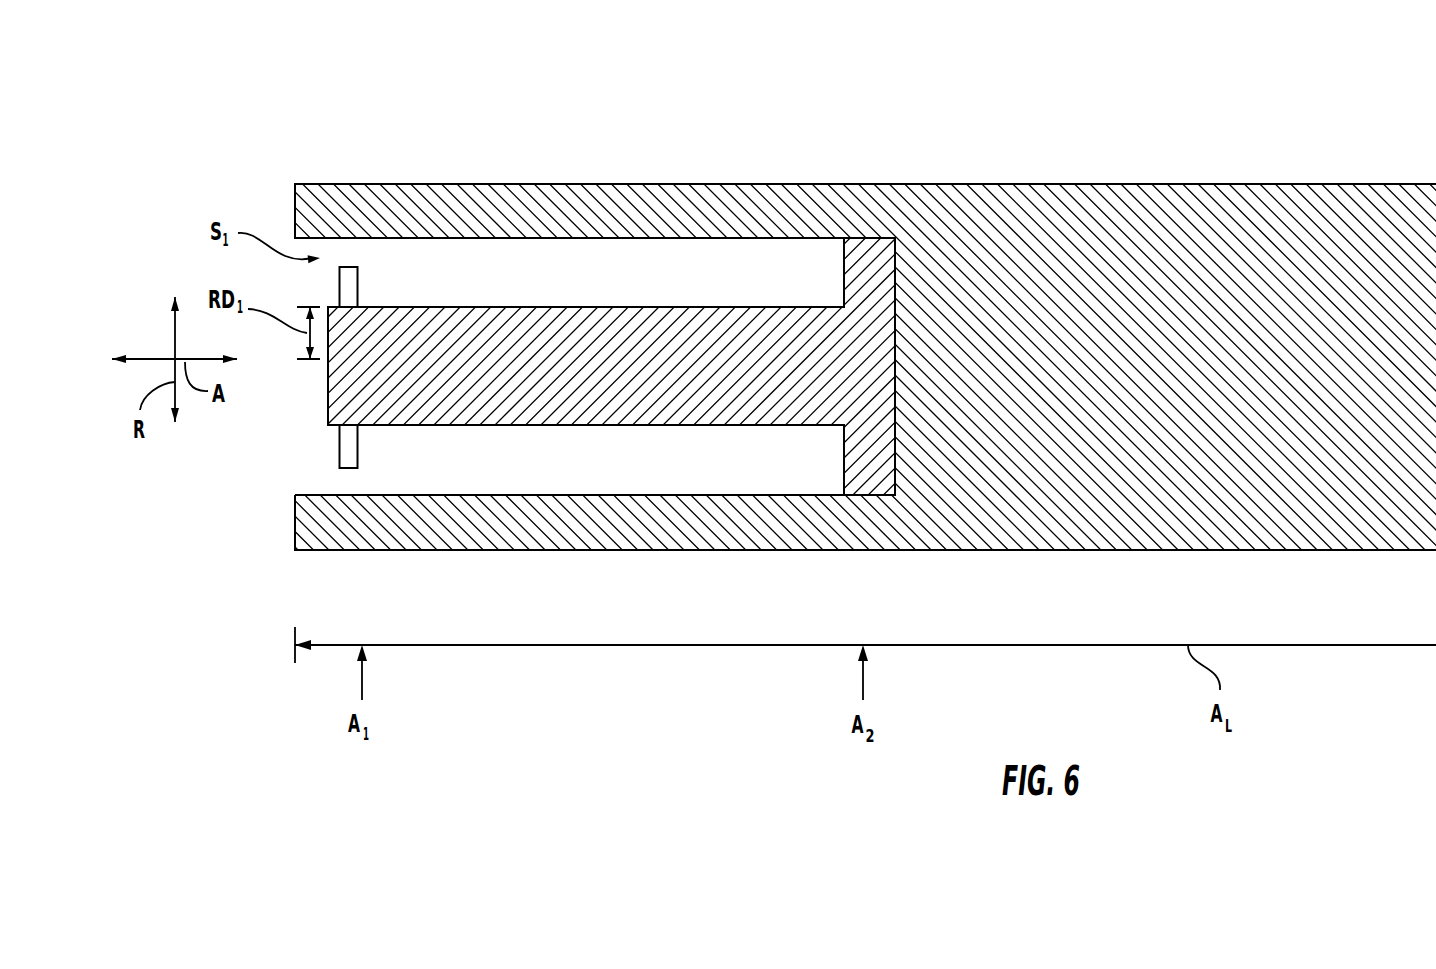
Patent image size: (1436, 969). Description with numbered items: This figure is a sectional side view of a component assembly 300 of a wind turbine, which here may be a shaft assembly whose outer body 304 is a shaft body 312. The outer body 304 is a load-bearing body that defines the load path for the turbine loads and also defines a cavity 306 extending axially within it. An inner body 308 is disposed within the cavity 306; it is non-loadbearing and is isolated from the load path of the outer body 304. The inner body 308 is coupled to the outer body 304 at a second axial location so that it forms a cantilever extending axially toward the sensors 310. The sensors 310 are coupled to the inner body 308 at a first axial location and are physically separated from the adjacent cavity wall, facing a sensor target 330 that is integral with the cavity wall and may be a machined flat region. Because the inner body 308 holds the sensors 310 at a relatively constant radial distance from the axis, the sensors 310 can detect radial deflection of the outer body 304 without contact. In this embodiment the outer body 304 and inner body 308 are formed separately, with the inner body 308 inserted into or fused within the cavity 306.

The component assembly 300 is at (612, 66).
The outer body 304 is at (718, 329).
The shaft body 312 is at (1019, 195).
The cavity 306 is at (660, 278).
The inner body 308 is at (740, 315).
The sensor 310 is at (350, 288).
The sensor target 330 is at (330, 488).